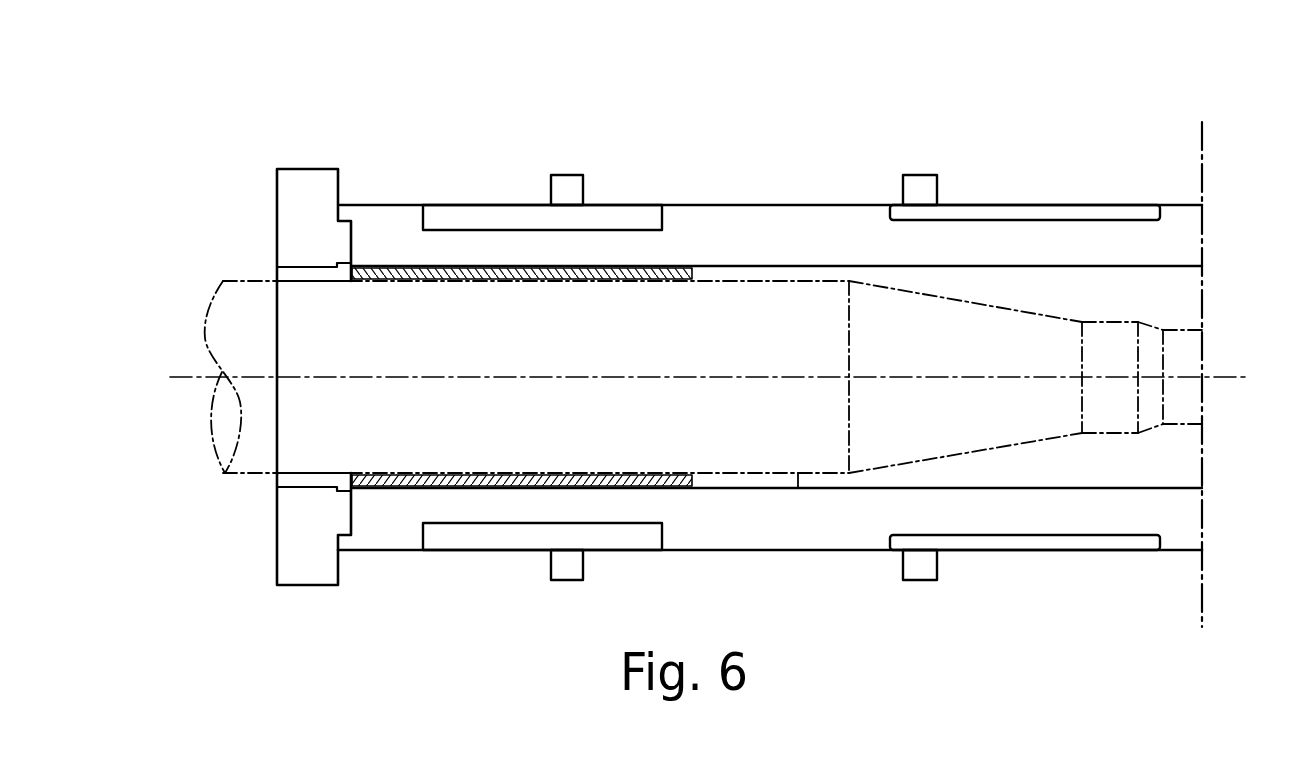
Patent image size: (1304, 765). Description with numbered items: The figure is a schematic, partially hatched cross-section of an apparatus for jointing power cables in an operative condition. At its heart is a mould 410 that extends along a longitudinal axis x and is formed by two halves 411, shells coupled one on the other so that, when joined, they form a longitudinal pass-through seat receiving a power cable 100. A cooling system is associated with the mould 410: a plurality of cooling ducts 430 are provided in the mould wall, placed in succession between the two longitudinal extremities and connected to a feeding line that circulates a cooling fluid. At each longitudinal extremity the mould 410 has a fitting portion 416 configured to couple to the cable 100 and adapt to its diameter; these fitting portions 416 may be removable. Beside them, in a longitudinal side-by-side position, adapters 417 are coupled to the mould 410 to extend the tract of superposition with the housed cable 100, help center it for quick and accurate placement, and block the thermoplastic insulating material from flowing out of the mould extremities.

The power cable 100 is at (832, 475).
The mould 410 is at (852, 206).
The halves of the mould 411 is at (403, 238).
The fitting portion 416 is at (288, 274).
The adapter 417 is at (392, 268).
The cooling duct 430 is at (502, 222).
The longitudinal axis x is at (1218, 377).